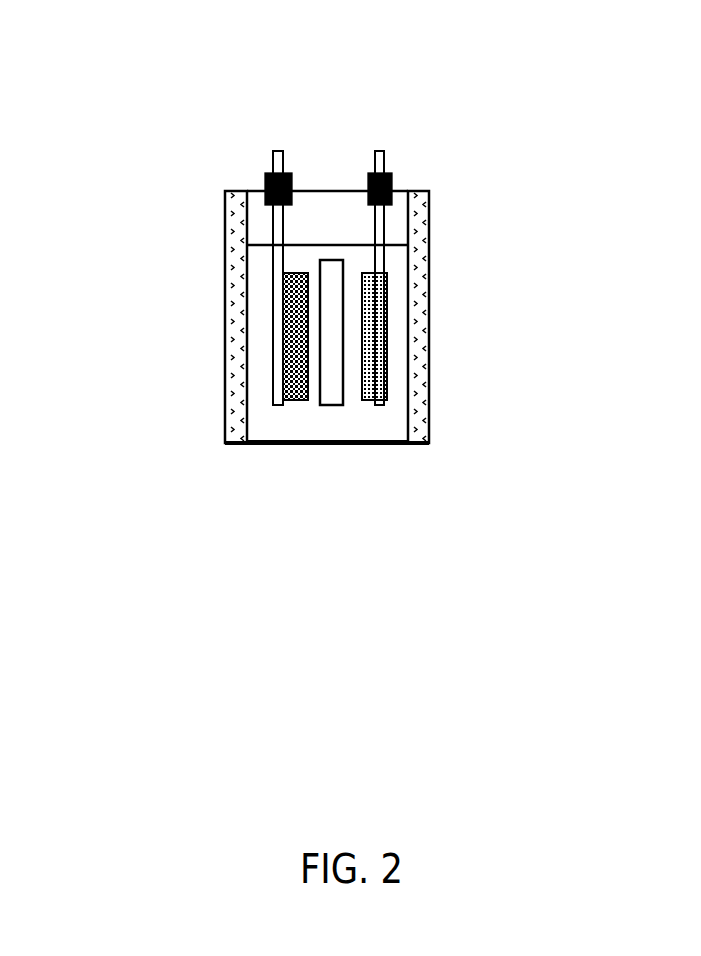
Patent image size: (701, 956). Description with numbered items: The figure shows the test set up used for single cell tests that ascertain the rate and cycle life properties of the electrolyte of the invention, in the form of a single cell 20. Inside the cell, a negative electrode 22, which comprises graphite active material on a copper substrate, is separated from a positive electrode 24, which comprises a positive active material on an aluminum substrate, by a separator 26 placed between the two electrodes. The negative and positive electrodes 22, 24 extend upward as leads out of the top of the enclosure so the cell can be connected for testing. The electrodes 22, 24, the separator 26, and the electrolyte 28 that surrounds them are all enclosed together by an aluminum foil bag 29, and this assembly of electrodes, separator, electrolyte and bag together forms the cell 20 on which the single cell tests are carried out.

The single cell 20 is at (170, 457).
The negative electrode 22 is at (278, 153).
The positive electrode 24 is at (383, 162).
The separator 26 is at (323, 405).
The electrolyte 28 is at (362, 423).
The aluminum foil bag 29 is at (428, 300).